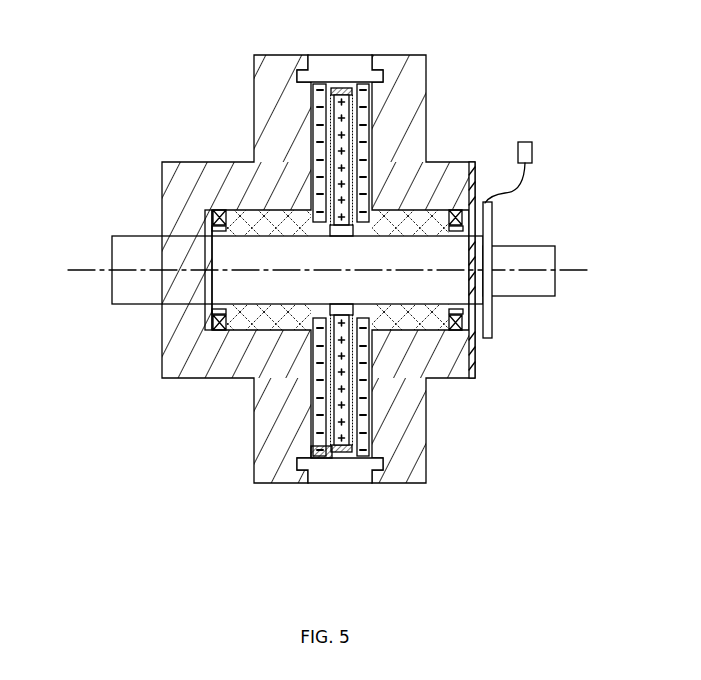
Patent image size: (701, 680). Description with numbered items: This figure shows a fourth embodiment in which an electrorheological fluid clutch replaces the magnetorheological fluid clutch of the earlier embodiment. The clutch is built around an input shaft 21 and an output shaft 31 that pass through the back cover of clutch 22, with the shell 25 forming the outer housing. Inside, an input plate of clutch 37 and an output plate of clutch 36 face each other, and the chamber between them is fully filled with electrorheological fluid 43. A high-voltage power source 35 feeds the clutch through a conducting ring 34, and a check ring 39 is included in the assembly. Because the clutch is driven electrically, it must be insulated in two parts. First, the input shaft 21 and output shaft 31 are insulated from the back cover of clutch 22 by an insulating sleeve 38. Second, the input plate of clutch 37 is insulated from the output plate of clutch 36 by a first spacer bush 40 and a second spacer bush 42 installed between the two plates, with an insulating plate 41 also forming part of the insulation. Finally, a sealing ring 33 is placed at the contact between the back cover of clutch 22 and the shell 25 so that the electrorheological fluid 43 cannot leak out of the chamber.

The input shaft 21 is at (163, 288).
The back cover of clutch 22 is at (420, 368).
The shell 25 is at (323, 468).
The output shaft 31 is at (505, 288).
The sealing ring 33 is at (378, 73).
The conducting ring 34 is at (487, 217).
The high-voltage power source 35 is at (532, 155).
The output plate of clutch 36 is at (362, 158).
The input plate of clutch 37 is at (340, 135).
The insulating sleeve 38 is at (263, 222).
The check ring 39 is at (225, 222).
The spacer bush 40 is at (335, 233).
The insulating plate 41 is at (317, 322).
The spacer bush 42 is at (330, 453).
The electrorheological fluid 43 is at (352, 418).